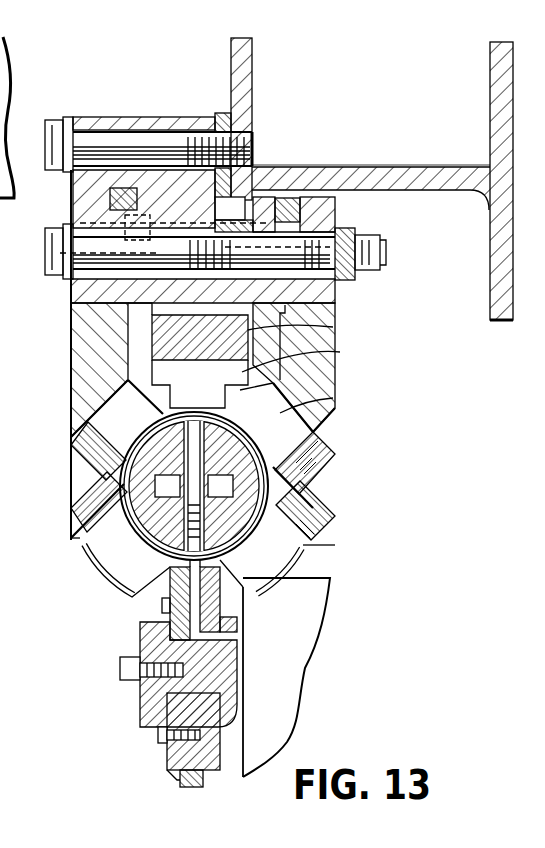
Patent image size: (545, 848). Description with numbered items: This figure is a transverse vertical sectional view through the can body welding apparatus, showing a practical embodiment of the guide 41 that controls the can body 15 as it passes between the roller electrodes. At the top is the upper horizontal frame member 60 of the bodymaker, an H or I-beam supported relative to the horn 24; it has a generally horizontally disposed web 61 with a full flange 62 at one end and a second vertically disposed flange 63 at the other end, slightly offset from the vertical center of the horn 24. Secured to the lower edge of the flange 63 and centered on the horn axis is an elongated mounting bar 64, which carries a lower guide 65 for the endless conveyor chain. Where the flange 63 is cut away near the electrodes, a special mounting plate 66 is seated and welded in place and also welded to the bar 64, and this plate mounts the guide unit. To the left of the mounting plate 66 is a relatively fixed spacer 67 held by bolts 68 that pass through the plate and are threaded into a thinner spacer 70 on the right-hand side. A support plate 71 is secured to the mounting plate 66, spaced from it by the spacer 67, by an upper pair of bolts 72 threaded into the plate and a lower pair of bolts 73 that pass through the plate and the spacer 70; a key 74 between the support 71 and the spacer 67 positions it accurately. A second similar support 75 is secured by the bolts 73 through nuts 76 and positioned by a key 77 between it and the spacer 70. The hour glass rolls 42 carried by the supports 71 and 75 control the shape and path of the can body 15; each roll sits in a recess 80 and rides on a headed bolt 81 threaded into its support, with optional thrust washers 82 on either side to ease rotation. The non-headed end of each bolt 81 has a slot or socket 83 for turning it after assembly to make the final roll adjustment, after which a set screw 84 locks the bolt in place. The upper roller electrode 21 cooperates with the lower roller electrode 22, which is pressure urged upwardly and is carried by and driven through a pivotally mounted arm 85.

The can body 15 is at (123, 552).
The upper roller electrode 21 is at (187, 450).
The lower roller electrode 22 is at (180, 788).
The horn 24 is at (235, 458).
The guide 41 is at (354, 383).
The hour glass rolls 42 is at (105, 422).
The upper horizontal frame member 60 is at (346, 165).
The web 61 is at (395, 173).
The full flange 62 is at (490, 128).
The second vertically disposed flange 63 is at (262, 72).
The mounting bar 64 is at (335, 328).
The lower guide 65 is at (335, 352).
The mounting plate 66 is at (220, 117).
The spacer 67 is at (183, 90).
The bolts 68 is at (70, 312).
The thinner spacer 70 is at (272, 167).
The support plate 71 is at (70, 380).
The upper pair of bolts 72 is at (103, 140).
The lower pair of bolts 73 is at (90, 262).
The key 74 is at (113, 193).
The second support 75 is at (327, 300).
The nuts 76 is at (372, 237).
The key 77 is at (302, 210).
The recess 80 is at (290, 412).
The headed bolt 81 is at (330, 472).
The thrust washers 82 is at (273, 528).
The slot or socket 83 is at (310, 495).
The set screw 84 is at (323, 525).
The arm 85 is at (320, 648).